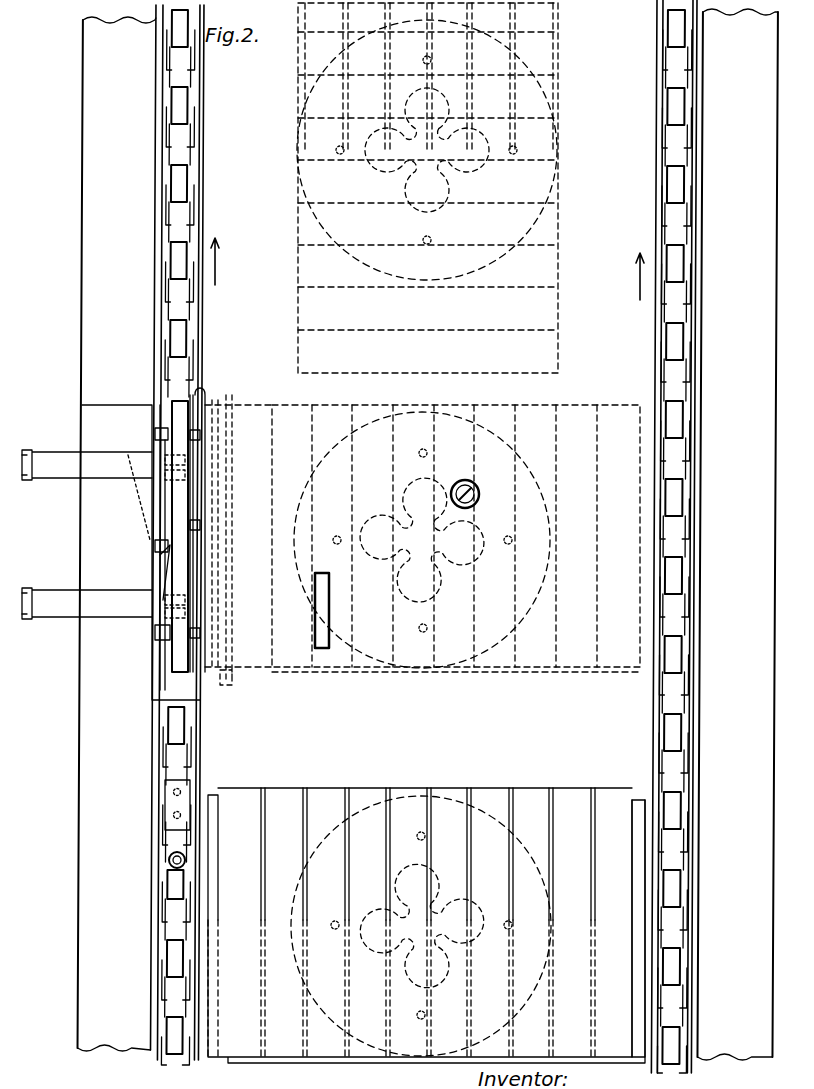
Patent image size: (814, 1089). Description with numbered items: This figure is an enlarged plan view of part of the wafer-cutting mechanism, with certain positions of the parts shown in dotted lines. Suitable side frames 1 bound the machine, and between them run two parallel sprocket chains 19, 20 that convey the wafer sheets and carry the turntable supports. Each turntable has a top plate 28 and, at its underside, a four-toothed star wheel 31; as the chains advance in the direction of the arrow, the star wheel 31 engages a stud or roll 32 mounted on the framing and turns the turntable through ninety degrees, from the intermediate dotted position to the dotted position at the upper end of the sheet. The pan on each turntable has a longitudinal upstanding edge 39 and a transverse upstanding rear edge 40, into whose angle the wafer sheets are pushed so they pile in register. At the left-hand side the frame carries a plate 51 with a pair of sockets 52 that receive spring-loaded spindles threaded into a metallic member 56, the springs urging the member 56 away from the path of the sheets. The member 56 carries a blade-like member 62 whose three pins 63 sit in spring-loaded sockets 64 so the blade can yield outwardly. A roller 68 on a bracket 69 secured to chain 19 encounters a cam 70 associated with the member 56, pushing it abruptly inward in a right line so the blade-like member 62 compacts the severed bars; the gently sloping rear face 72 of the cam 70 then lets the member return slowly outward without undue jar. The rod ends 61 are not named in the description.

The side frame 1 is at (83, 77).
The sprocket chain 19 is at (160, 920).
The sprocket chain 20 is at (692, 919).
The top plate 28 is at (528, 67).
The star wheel 31 is at (455, 176).
The stud or roll 32 is at (476, 485).
The upstanding edge 39 is at (643, 875).
The rear edge 40 is at (298, 310).
The plate 51 is at (84, 526).
The socket 52 is at (62, 452).
The member 56 is at (178, 496).
The rod end 61 is at (26, 442).
The blade-like member 62 is at (205, 576).
The pin or short spindle 63 is at (195, 433).
The socket 64 is at (158, 435).
The roller 68 is at (168, 858).
The bracket 69 is at (172, 838).
The cam 70 is at (163, 560).
The rear face 72 is at (148, 452).